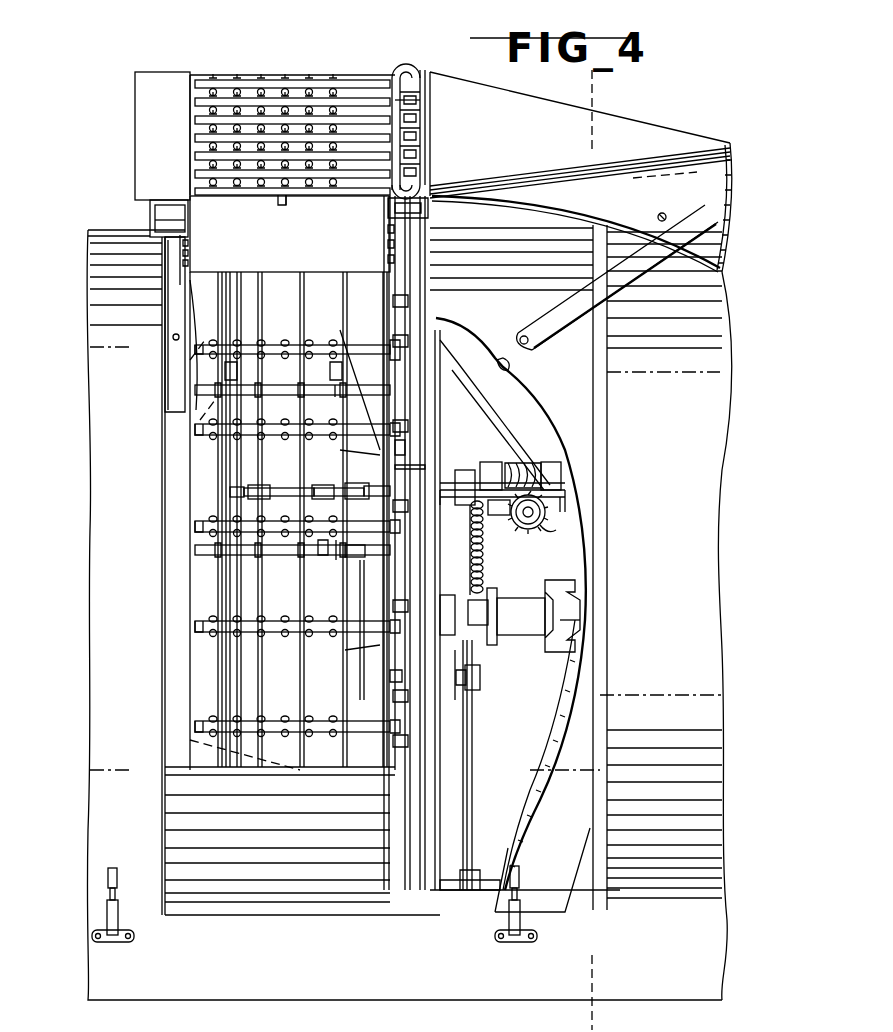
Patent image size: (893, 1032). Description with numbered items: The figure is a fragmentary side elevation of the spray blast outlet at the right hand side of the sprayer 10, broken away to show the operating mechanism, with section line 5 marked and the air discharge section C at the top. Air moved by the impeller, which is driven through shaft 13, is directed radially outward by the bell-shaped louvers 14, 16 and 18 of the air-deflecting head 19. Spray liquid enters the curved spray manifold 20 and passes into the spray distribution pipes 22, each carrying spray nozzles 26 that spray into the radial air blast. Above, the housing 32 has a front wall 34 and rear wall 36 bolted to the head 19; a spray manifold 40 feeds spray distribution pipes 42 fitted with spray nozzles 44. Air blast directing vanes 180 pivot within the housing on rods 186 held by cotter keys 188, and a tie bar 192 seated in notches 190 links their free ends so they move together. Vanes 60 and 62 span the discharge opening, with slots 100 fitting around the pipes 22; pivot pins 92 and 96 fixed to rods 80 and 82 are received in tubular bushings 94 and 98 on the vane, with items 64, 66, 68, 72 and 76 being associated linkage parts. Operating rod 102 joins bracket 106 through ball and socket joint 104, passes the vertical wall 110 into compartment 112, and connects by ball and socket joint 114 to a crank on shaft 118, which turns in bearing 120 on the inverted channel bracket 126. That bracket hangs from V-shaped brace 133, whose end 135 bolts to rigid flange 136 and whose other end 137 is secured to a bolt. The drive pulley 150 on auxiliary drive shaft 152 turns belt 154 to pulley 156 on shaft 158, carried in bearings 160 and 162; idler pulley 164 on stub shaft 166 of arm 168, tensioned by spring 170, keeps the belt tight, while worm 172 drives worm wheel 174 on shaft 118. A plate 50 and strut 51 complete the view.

The section line 5- 5 is at (596, 80).
The sprayer 10 is at (700, 122).
The shaft 13 is at (580, 600).
The bell-shaped louver 14 is at (220, 275).
The bell-shaped louver 16 is at (262, 285).
The bell-shaped louver 18 is at (303, 306).
The air-deflecting head 19 is at (205, 466).
The spray manifold 20 is at (425, 420).
The spray distribution pipe 22 is at (200, 350).
The spray nozzle 26 is at (310, 344).
The housing 32 is at (135, 160).
The front wall 34 is at (390, 300).
The rear wall 36 is at (192, 282).
The spray manifold 40 is at (410, 120).
The spray distribution pipe 42 is at (215, 180).
The spray nozzle 44 is at (333, 76).
The side plate 50 is at (554, 135).
The support strut 51 is at (540, 325).
The vane 60 is at (236, 452).
The vane 62 is at (347, 465).
The link rod 64 is at (283, 498).
The link end 66 is at (262, 490).
The link rod 68 is at (335, 495).
The link pivot 72 is at (240, 490).
The link end 76 is at (336, 488).
The rod 80 is at (286, 378).
The rod 82 is at (304, 558).
The pivot pin 92 is at (338, 395).
The tubular bushing 94 is at (335, 380).
The pivot pin 96 is at (340, 560).
The tubular bushing 98 is at (325, 555).
The slot 100 is at (340, 352).
The operating rod 102 is at (405, 475).
The ball and socket joint 104 is at (378, 496).
The bracket 106 is at (350, 544).
The vertical wall 110 is at (390, 590).
The compartment 112 is at (525, 694).
The ball and socket joint 114 is at (487, 525).
The shaft 118 is at (548, 520).
The bearing 120 is at (512, 508).
The inverted channel bracket 126 is at (562, 505).
The V-shaped brace 133 is at (482, 402).
The end of brace 135 is at (447, 352).
The rigid flange 136 is at (392, 396).
The end of brace 137 is at (560, 490).
The drive pulley 150 is at (472, 850).
The auxiliary drive shaft 152 is at (486, 870).
The belt 154 is at (462, 800).
The pulley 156 is at (470, 470).
The shaft 158 is at (492, 465).
The bearing 160 is at (525, 462).
The bearing 162 is at (560, 478).
The belt tightening idler pulley 164 is at (468, 700).
The stub shaft 166 is at (392, 678).
The arm 168 is at (481, 668).
The tension spring 170 is at (482, 570).
The worm 172 is at (560, 462).
The worm wheel 174 is at (545, 525).
The air blast directing vane 180 is at (297, 235).
The rod 186 is at (186, 258).
The cotter key 188 is at (405, 250).
The notch 190 is at (288, 205).
The tie bar 192 is at (279, 205).
The air discharge section C is at (358, 74).